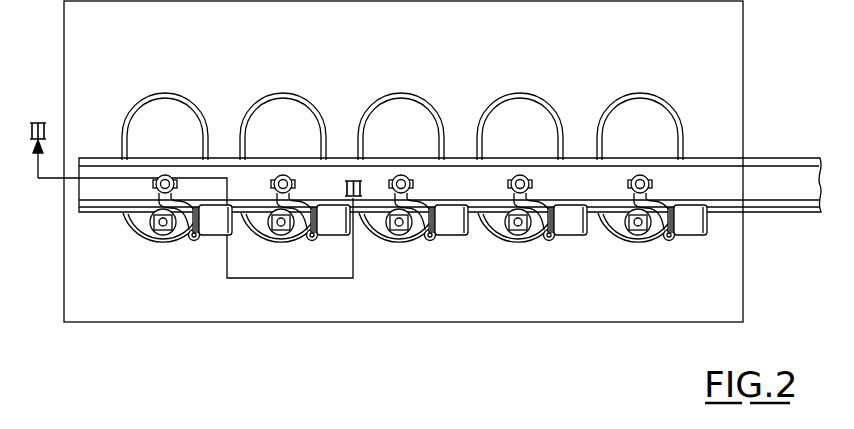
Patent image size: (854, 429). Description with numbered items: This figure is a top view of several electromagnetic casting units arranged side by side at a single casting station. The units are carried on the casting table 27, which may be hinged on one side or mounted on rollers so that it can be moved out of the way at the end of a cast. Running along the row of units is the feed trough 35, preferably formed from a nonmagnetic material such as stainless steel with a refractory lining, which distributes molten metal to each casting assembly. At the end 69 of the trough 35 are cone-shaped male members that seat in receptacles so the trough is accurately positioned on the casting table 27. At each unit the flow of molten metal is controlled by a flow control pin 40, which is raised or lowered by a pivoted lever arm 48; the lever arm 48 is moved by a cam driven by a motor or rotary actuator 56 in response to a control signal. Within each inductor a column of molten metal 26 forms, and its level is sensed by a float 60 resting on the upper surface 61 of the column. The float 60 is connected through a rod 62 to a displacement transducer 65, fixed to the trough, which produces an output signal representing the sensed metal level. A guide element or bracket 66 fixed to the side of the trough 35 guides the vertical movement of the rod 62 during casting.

The column of molten metal 26 is at (170, 106).
The casting table 27 is at (293, 160).
The feed trough 35 is at (381, 160).
The flow control pin 40 is at (294, 179).
The lever arm 48 is at (544, 207).
The rotary actuator 56 is at (452, 204).
The float 60 is at (175, 247).
The upper surface 61 is at (165, 126).
The rod 62 is at (293, 240).
The displacement transducer 65 is at (414, 251).
The guide element or bracket 66 is at (273, 256).
The end of trough 69 is at (450, 164).